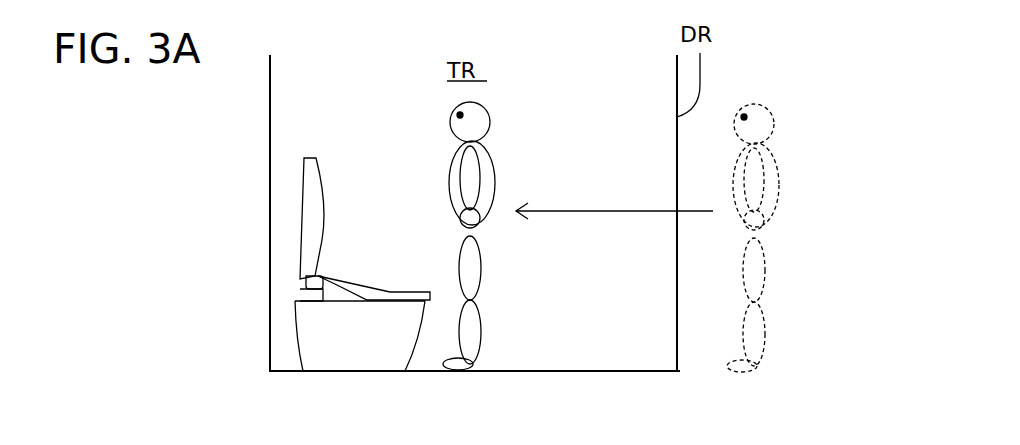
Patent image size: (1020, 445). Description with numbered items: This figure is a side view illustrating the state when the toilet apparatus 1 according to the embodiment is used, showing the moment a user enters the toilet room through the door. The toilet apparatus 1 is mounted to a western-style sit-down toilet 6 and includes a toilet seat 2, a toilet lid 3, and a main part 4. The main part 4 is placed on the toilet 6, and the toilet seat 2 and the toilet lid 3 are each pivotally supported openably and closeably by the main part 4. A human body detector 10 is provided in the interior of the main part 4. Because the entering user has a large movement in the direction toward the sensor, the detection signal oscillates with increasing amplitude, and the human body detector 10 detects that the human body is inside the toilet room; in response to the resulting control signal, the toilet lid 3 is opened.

The toilet apparatus 1 is at (305, 258).
The toilet seat 2 is at (387, 297).
The toilet lid 3 is at (308, 208).
The main part 4 is at (317, 293).
The toilet 6 is at (322, 335).
The human body detector 10 is at (313, 285).